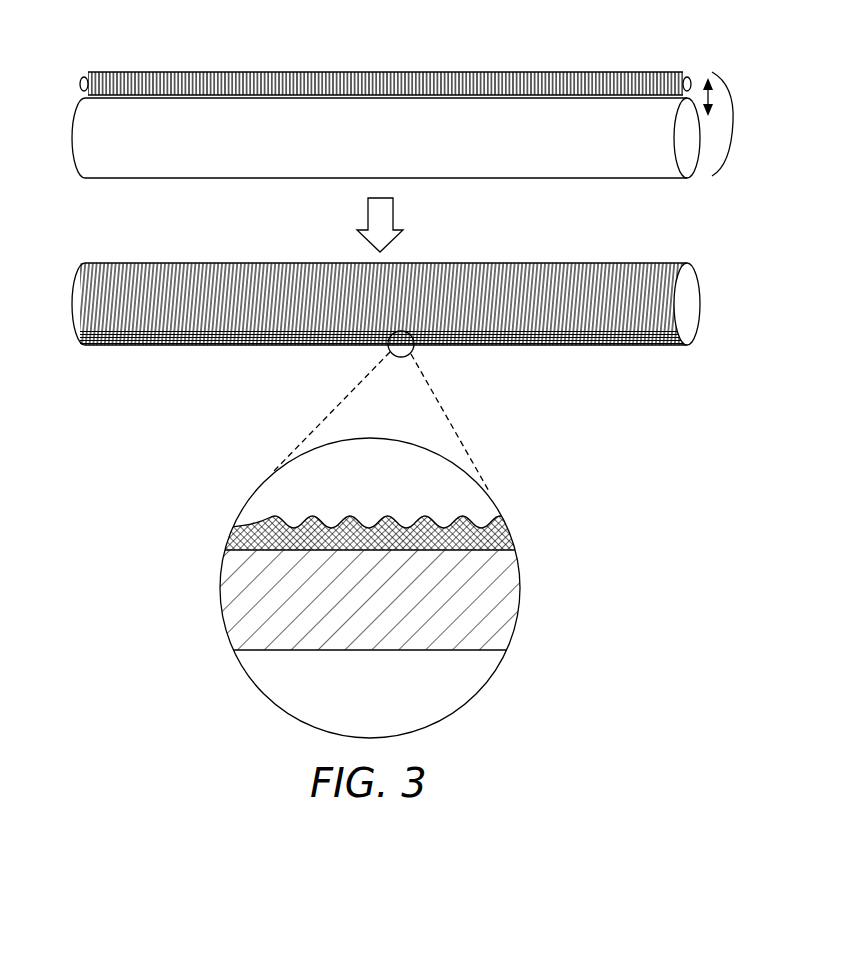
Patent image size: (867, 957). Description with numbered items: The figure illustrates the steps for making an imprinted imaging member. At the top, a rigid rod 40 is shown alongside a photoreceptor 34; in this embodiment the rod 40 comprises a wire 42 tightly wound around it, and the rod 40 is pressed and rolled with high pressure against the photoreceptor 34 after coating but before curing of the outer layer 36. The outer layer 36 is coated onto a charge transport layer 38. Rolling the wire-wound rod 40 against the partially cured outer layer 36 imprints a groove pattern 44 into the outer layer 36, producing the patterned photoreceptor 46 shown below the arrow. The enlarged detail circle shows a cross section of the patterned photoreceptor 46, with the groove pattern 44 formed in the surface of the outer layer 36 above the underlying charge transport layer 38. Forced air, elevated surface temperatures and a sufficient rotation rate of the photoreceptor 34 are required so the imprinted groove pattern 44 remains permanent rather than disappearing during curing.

The photoreceptor 34 is at (704, 198).
The outer layer 36 is at (84, 124).
The charge transport layer 38 is at (508, 605).
The rigid rod 40 is at (690, 82).
The wire 42 is at (145, 70).
The groove pattern 44 is at (388, 518).
The patterned photoreceptor 46 is at (102, 244).